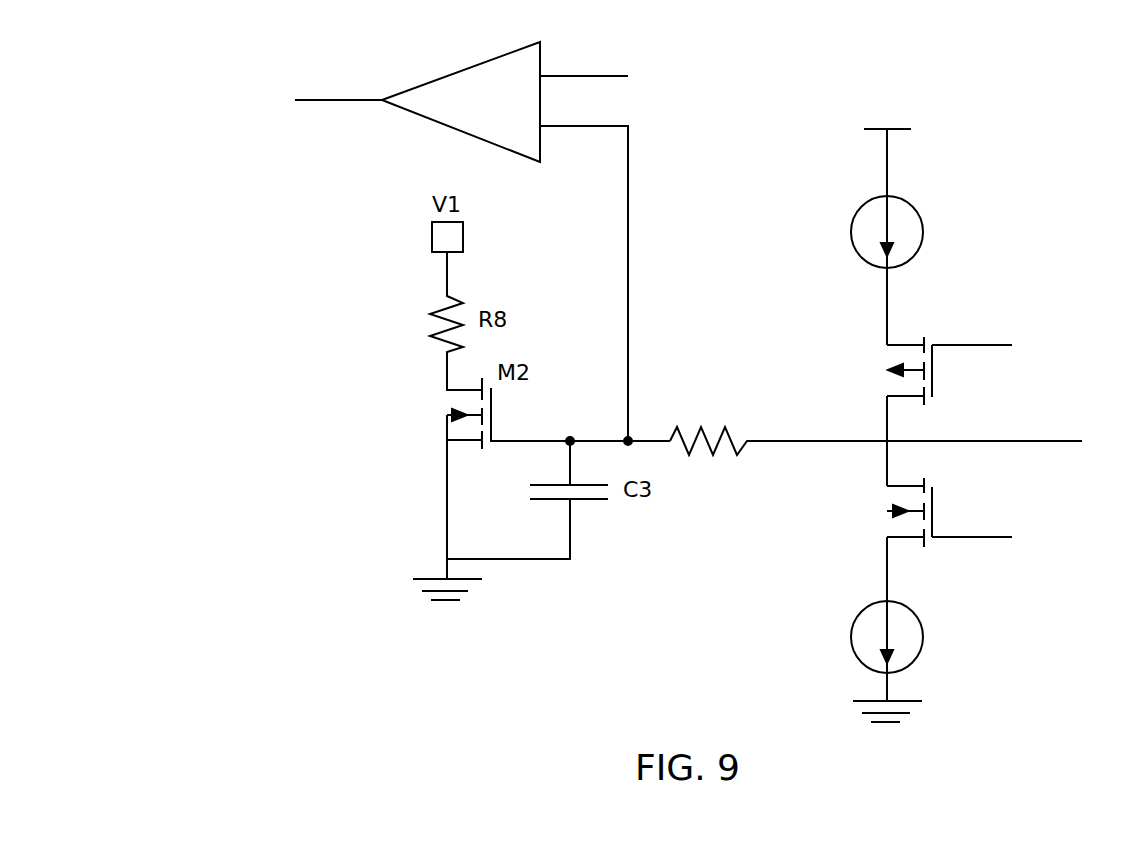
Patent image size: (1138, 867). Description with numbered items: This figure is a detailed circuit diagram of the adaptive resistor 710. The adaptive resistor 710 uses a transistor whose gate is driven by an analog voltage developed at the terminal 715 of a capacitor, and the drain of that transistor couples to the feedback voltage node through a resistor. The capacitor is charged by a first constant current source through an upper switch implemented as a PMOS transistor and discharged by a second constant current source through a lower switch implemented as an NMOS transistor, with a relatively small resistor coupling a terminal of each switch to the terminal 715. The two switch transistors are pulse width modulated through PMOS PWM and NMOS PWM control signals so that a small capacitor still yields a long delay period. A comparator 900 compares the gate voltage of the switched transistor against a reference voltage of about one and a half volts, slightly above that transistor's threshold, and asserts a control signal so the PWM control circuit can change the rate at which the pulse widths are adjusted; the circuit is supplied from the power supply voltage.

The comparator 900 is at (462, 70).
The adaptive resistor 710 is at (751, 263).
The terminal 715 is at (570, 438).